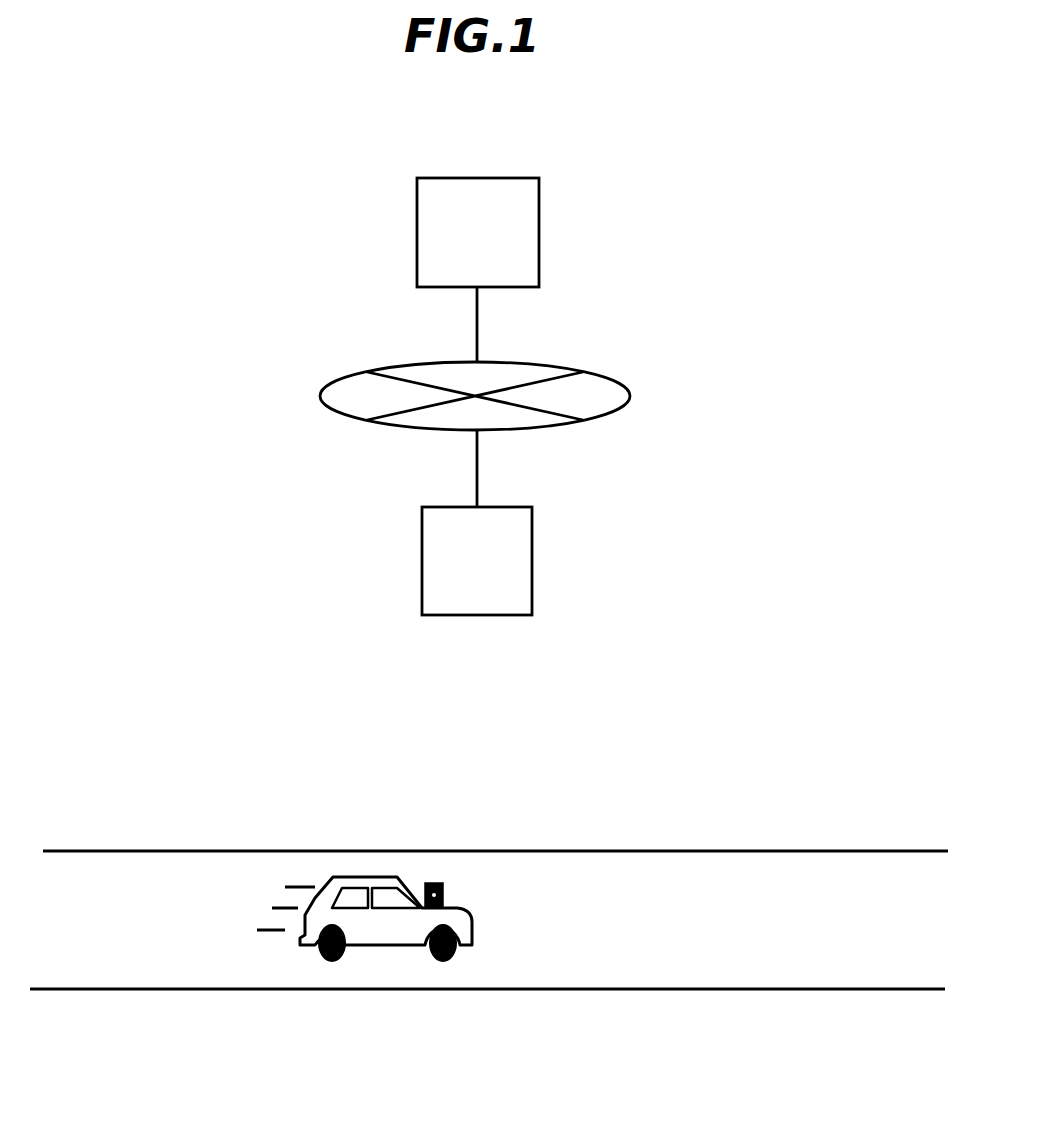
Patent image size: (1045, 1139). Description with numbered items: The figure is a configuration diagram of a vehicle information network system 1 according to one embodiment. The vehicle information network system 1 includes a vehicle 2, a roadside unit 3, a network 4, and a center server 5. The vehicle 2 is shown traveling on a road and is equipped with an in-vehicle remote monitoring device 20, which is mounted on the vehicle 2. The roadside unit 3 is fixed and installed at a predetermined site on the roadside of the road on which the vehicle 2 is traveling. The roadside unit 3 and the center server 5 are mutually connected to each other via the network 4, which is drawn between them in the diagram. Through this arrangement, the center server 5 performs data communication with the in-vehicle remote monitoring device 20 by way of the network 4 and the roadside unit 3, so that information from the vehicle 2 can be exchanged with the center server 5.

The vehicle information network system 1 is at (880, 207).
The vehicle 2 is at (383, 962).
The roadside unit 3 is at (532, 572).
The network 4 is at (630, 396).
The center server 5 is at (539, 245).
The in-vehicle remote monitoring device 20 is at (433, 883).